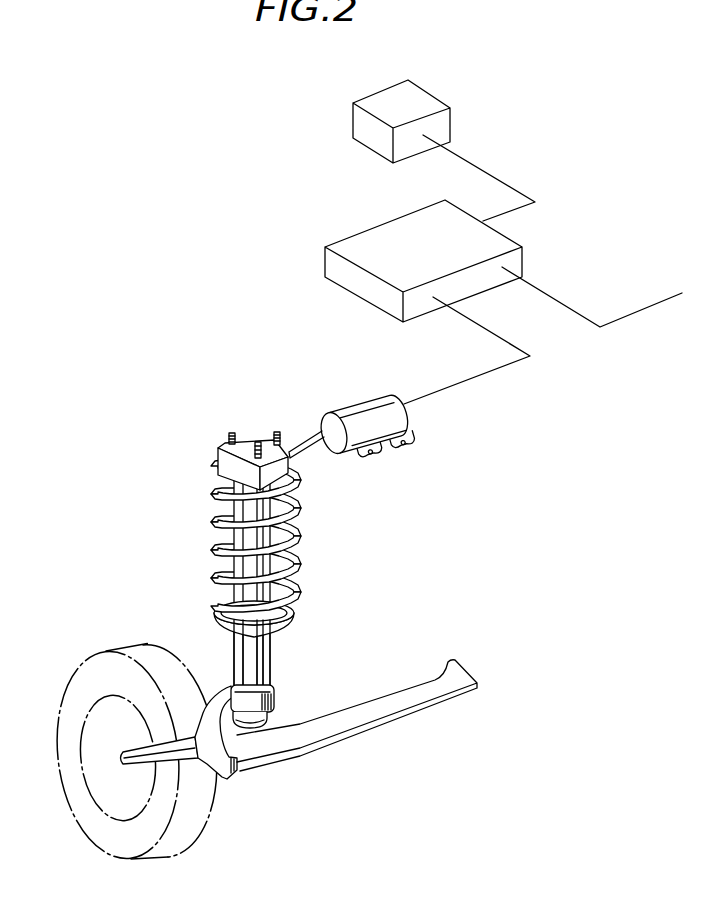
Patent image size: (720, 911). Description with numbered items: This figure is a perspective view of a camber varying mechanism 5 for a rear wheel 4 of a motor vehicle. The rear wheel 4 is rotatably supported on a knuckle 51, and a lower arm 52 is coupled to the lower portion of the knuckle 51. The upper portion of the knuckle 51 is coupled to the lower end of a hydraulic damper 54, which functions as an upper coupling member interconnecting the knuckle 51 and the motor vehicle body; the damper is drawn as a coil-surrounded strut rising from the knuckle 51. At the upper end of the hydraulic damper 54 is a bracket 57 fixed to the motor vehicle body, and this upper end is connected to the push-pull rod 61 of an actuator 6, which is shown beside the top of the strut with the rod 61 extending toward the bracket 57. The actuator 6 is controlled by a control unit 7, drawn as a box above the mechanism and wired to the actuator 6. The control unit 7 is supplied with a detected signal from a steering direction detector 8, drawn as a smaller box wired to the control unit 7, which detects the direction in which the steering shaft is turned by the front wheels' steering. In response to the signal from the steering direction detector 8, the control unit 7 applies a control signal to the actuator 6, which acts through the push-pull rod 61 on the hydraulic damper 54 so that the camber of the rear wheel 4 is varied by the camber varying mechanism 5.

The rear wheel 4 is at (67, 688).
The camber varying mechanism 5 is at (210, 493).
The actuator 6 is at (350, 414).
The control unit 7 is at (367, 237).
The steering direction detector 8 is at (435, 103).
The knuckle 51 is at (203, 700).
The lower arm 52 is at (355, 710).
The hydraulic damper 54 is at (222, 568).
The bracket 57 is at (292, 467).
The push-pull rod 61 is at (298, 443).